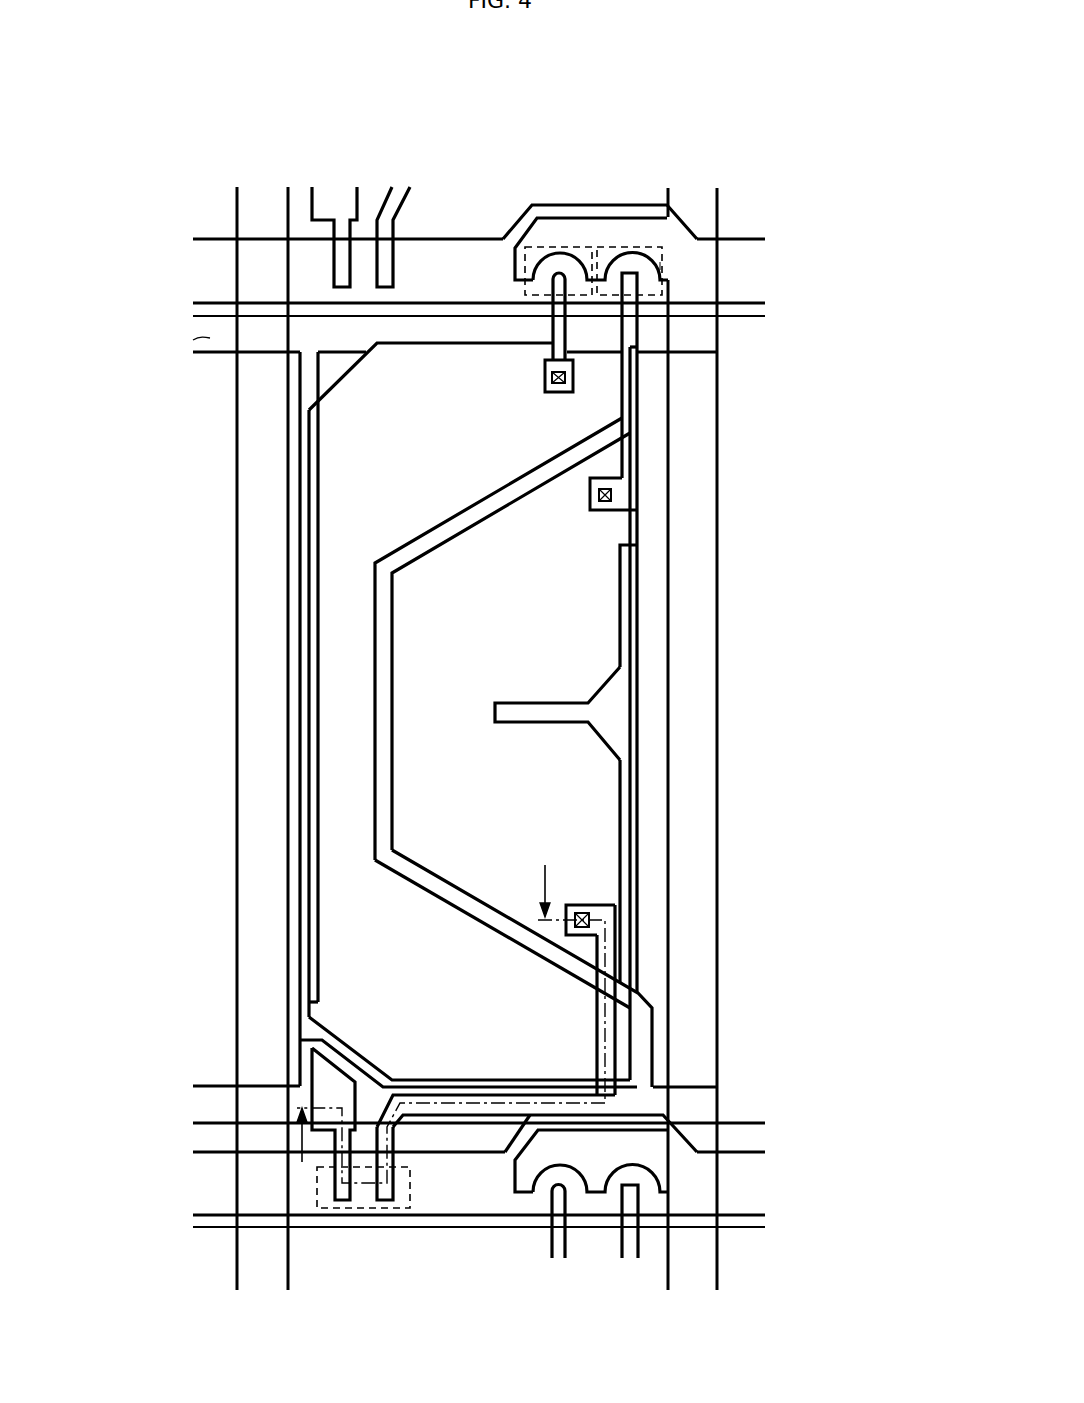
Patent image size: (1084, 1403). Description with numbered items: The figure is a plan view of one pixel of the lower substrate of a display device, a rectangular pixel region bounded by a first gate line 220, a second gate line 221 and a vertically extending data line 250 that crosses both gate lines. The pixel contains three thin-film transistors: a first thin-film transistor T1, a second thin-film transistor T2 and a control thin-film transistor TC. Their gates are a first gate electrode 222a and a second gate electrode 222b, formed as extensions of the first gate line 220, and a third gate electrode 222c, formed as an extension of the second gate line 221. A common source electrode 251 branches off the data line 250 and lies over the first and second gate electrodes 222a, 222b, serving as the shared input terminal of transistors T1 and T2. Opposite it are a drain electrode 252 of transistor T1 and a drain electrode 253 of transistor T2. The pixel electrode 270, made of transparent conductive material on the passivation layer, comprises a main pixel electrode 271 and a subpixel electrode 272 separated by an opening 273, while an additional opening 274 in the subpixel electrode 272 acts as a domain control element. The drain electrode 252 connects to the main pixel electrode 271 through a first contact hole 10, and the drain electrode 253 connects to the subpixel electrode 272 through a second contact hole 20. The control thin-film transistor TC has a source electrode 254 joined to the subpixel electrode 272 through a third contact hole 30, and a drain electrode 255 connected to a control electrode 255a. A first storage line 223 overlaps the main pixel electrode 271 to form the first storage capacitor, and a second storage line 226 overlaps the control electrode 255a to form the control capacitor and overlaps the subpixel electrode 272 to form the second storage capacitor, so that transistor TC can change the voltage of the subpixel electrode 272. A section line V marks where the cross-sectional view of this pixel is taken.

The first gate line 220 is at (215, 273).
The second gate line 221 is at (228, 1190).
The first gate electrode 222a is at (554, 262).
The second gate electrode 222b is at (629, 262).
The third gate electrode 222c is at (368, 1192).
The first storage line 223 is at (296, 384).
The second storage line 226 is at (299, 1057).
The data line 250 is at (703, 490).
The common source electrode 251 is at (597, 225).
The drain electrode of transistor T1 252 is at (547, 322).
The drain electrode of transistor T2 253 is at (650, 356).
The source electrode of transistor TC 254 is at (395, 1143).
The drain electrode of transistor TC 255 is at (338, 1194).
The control electrode 255a is at (300, 1085).
The pixel electrode 270 is at (835, 858).
The main pixel electrode 271 is at (575, 1036).
The subpixel electrode 272 is at (600, 856).
The opening 273 is at (383, 650).
The additional opening 274 is at (560, 710).
The first contact hole 10 is at (543, 378).
The second contact hole 20 is at (592, 498).
The third contact hole 30 is at (578, 905).
The first thin-film transistor T1 is at (528, 243).
The second thin-film transistor T2 is at (663, 265).
The control thin-film transistor TC is at (316, 1183).
The section line V-V' V is at (437, 1016).